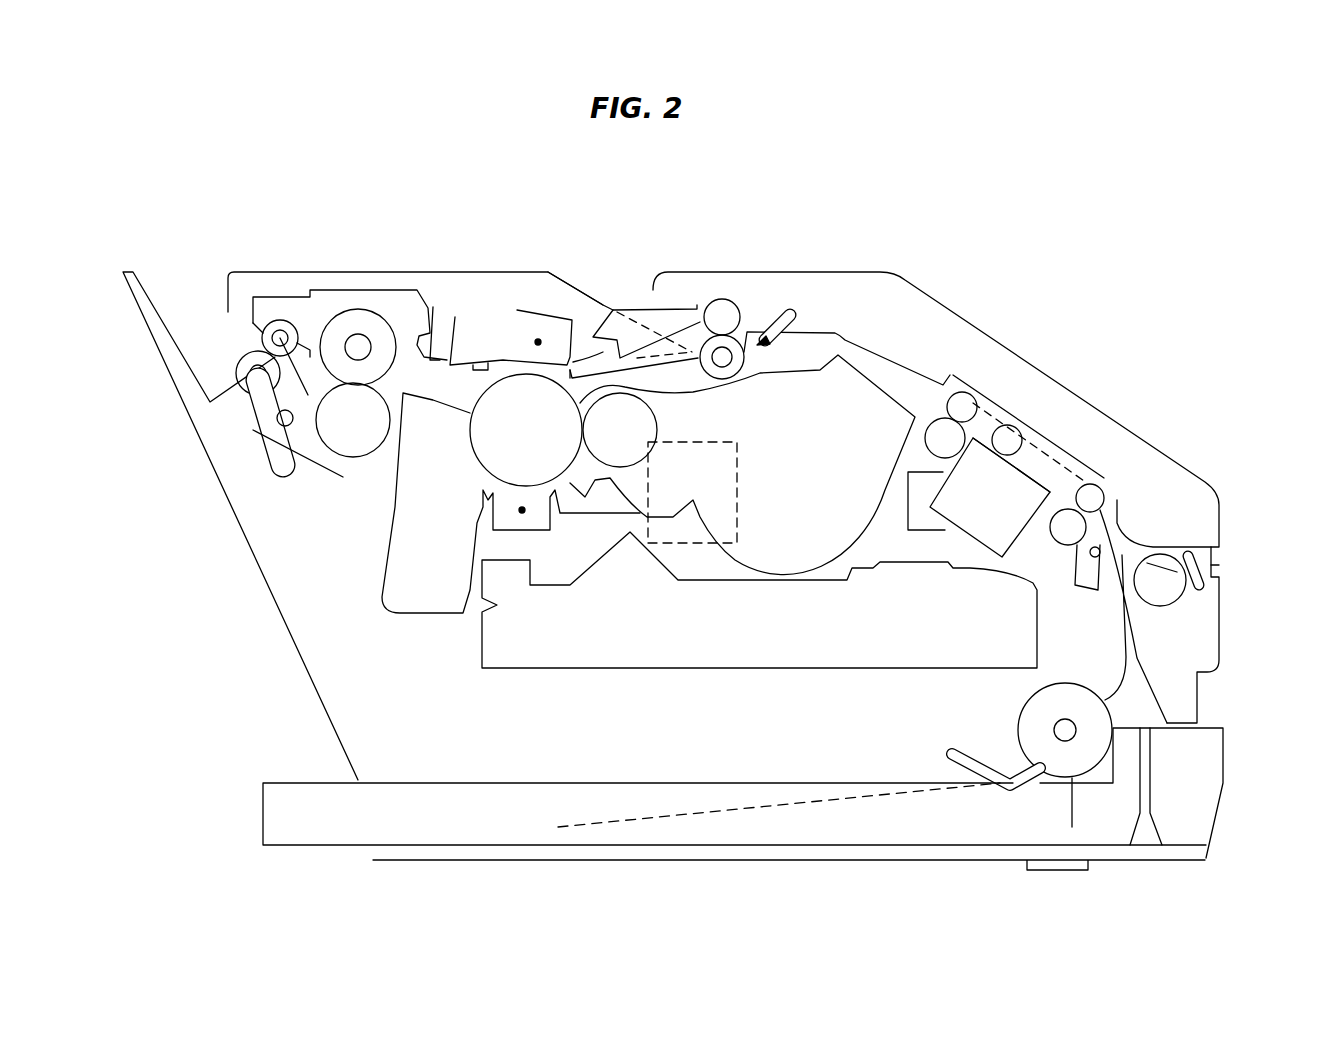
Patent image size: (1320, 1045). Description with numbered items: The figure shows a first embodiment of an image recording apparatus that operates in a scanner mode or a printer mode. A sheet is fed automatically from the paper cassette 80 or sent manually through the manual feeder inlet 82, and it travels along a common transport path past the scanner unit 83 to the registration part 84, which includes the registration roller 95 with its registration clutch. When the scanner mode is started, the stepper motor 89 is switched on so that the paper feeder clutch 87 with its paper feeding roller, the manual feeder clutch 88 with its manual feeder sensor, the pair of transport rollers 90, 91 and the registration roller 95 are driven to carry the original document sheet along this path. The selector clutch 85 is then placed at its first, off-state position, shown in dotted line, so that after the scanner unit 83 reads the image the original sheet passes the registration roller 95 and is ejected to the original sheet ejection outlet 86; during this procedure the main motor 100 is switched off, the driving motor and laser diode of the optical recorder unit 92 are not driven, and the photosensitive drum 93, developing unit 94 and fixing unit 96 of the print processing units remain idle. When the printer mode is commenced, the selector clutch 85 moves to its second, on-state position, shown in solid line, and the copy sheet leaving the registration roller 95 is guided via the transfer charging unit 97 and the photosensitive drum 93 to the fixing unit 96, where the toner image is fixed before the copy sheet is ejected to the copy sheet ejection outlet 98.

The paper cassette 80 is at (712, 832).
The manual feeder inlet 82 is at (1215, 566).
The scanner unit 83 is at (1033, 465).
The registration part 84 is at (778, 290).
The selector clutch 85 is at (680, 292).
The original sheet ejection outlet 86 is at (622, 290).
The paper feeder clutch 87 is at (1025, 767).
The manual feeder clutch 88 is at (1197, 553).
The stepper motor 89 is at (930, 517).
The transport roller 90 is at (1097, 498).
The transport roller 91 is at (965, 405).
The optical recorder unit 92 is at (860, 651).
The photosensitive drum 93 is at (490, 452).
The developing unit 94 is at (830, 524).
The registration roller 95 is at (738, 305).
The fixing unit 96 is at (338, 413).
The transfer charging unit 97 is at (538, 320).
The copy sheet ejection outlet 98 is at (202, 298).
The main motor 100 is at (687, 547).